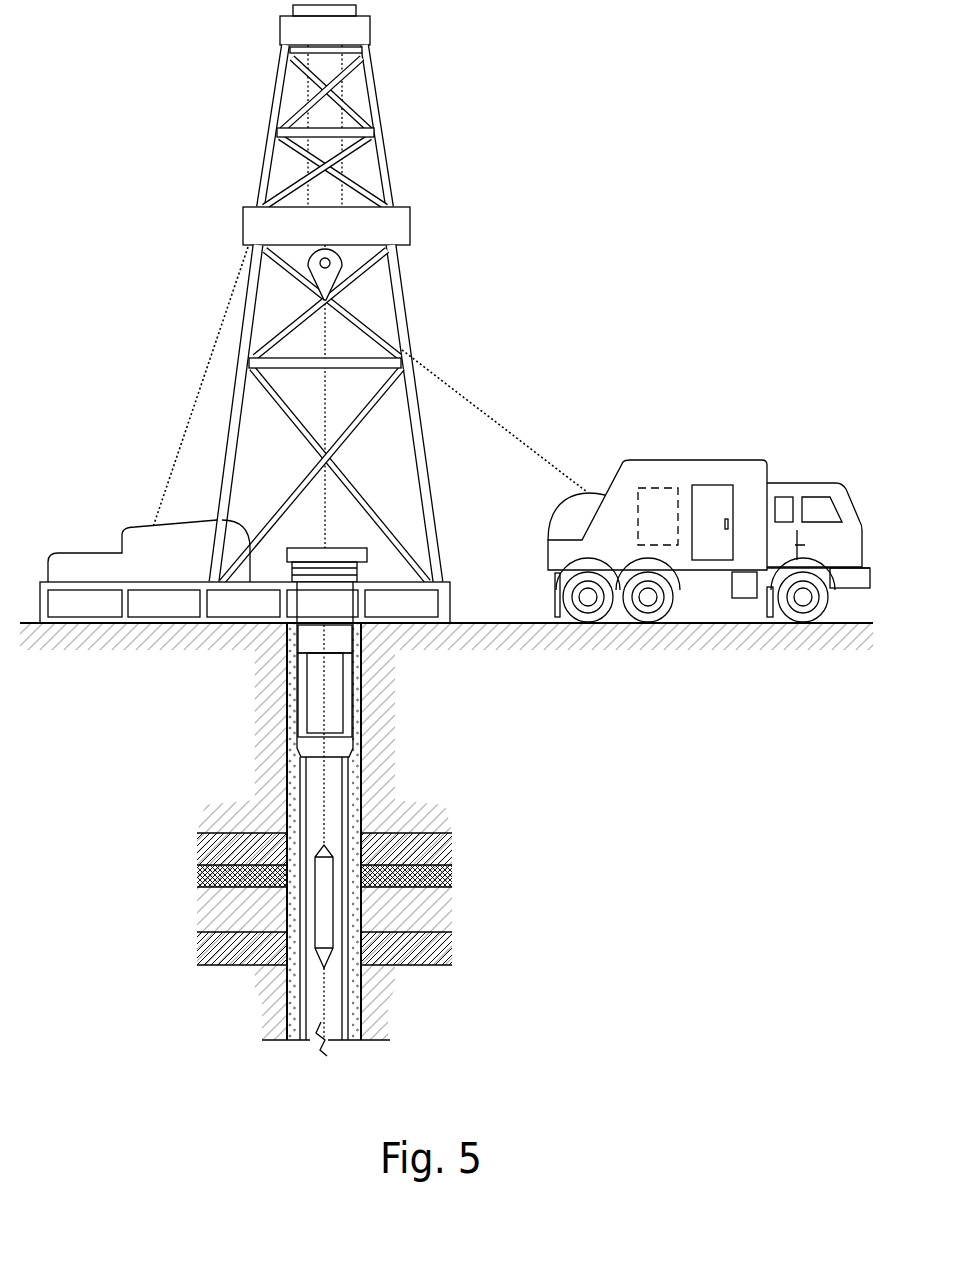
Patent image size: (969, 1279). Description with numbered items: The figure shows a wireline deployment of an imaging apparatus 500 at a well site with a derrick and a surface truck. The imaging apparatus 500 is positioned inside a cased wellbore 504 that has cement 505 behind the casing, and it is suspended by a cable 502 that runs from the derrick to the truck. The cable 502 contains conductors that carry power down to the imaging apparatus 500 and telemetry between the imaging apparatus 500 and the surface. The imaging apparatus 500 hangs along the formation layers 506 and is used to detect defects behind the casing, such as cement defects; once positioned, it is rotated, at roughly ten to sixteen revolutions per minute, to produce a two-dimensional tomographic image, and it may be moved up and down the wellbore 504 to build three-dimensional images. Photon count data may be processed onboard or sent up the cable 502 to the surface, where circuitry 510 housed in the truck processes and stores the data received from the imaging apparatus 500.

The imaging apparatus 500 is at (732, 460).
The cable 502 is at (468, 395).
The cased wellbore 504 is at (345, 807).
The cement 505 is at (288, 772).
The formation layers 506 is at (465, 832).
The circuitry 510 is at (646, 488).